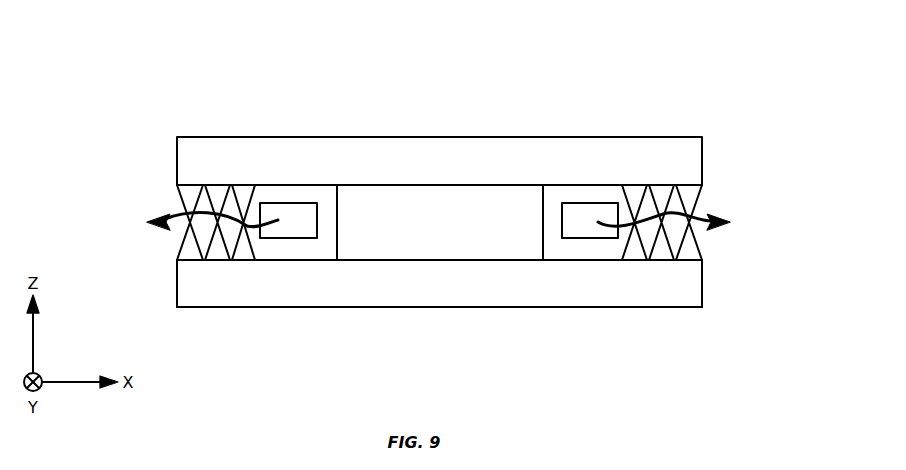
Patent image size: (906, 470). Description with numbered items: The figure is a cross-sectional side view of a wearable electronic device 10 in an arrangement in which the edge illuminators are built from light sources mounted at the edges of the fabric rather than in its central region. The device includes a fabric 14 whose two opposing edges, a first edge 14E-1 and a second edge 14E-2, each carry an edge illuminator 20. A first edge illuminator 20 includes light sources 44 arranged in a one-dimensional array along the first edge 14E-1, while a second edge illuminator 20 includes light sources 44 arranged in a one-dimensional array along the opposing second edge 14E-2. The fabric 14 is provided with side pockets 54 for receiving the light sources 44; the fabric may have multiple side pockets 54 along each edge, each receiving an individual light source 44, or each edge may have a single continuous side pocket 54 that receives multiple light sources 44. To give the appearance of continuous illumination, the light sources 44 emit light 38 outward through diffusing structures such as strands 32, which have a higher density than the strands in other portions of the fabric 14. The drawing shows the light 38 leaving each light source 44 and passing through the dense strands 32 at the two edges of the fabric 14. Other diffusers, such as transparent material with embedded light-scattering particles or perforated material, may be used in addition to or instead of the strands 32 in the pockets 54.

The device 10 is at (645, 62).
The fabric 14 is at (444, 137).
The first edge of fabric 14E-1 is at (164, 289).
The second edge of fabric 14E-2 is at (715, 289).
The edge illuminator 20 is at (288, 273).
The strands 32 is at (223, 202).
The light 38 is at (178, 217).
The light sources 44 is at (288, 213).
The side pockets 54 is at (552, 247).